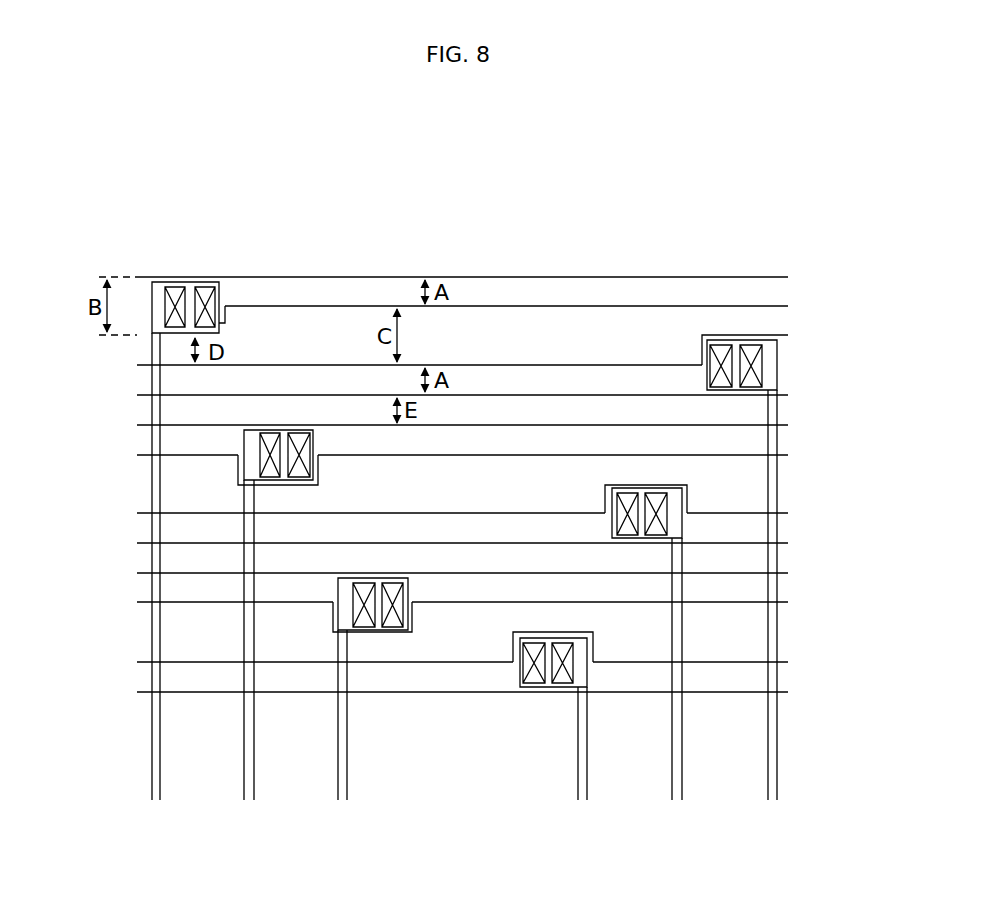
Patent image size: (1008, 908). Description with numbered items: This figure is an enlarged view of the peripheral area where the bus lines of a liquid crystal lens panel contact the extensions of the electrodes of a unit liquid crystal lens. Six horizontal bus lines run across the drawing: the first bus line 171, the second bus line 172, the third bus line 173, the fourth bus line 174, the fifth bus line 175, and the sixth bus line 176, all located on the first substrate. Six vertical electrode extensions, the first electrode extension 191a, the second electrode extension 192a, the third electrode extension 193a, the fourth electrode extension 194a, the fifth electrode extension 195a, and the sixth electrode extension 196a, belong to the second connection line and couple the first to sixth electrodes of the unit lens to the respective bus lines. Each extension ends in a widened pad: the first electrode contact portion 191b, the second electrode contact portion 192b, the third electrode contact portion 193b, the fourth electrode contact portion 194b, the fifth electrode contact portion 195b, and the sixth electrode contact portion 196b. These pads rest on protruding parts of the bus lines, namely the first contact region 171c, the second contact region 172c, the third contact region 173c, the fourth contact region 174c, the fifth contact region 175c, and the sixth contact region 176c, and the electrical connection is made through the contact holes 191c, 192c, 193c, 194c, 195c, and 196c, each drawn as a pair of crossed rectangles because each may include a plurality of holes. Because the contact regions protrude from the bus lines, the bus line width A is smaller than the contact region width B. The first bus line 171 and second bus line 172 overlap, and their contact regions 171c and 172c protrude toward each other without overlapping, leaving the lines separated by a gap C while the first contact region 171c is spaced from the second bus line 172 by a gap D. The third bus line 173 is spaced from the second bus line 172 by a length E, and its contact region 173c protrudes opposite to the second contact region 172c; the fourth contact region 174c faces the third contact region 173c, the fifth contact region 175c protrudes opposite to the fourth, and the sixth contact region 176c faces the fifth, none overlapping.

The first bus line 171 is at (468, 295).
The first contact region 171c is at (225, 323).
The second bus line 172 is at (543, 382).
The second contact region 172c is at (712, 337).
The third bus line 173 is at (748, 440).
The third contact region 173c is at (285, 485).
The fourth bus line 174 is at (173, 528).
The fourth contact region 174c is at (608, 486).
The fifth bus line 175 is at (173, 586).
The fifth contact region 175c is at (333, 620).
The sixth bus line 176 is at (173, 675).
The sixth contact region 176c is at (593, 643).
The first electrode extension 191a is at (157, 788).
The first electrode contact portion 191b is at (219, 291).
The contact holes 191c is at (206, 286).
The second electrode extension 192a is at (773, 788).
The second electrode contact portion 192b is at (767, 340).
The contact holes 192c is at (752, 345).
The third electrode extension 193a is at (250, 788).
The third electrode contact portion 193b is at (318, 467).
The contact holes 193c is at (260, 450).
The fourth electrode extension 194a is at (678, 788).
The fourth electrode contact portion 194b is at (690, 483).
The contact holes 194c is at (628, 538).
The fifth electrode extension 195a is at (344, 788).
The fifth electrode contact portion 195b is at (408, 613).
The contact holes 195c is at (363, 627).
The sixth electrode extension 196a is at (584, 788).
The sixth electrode contact portion 196b is at (520, 675).
The contact holes 196c is at (533, 683).